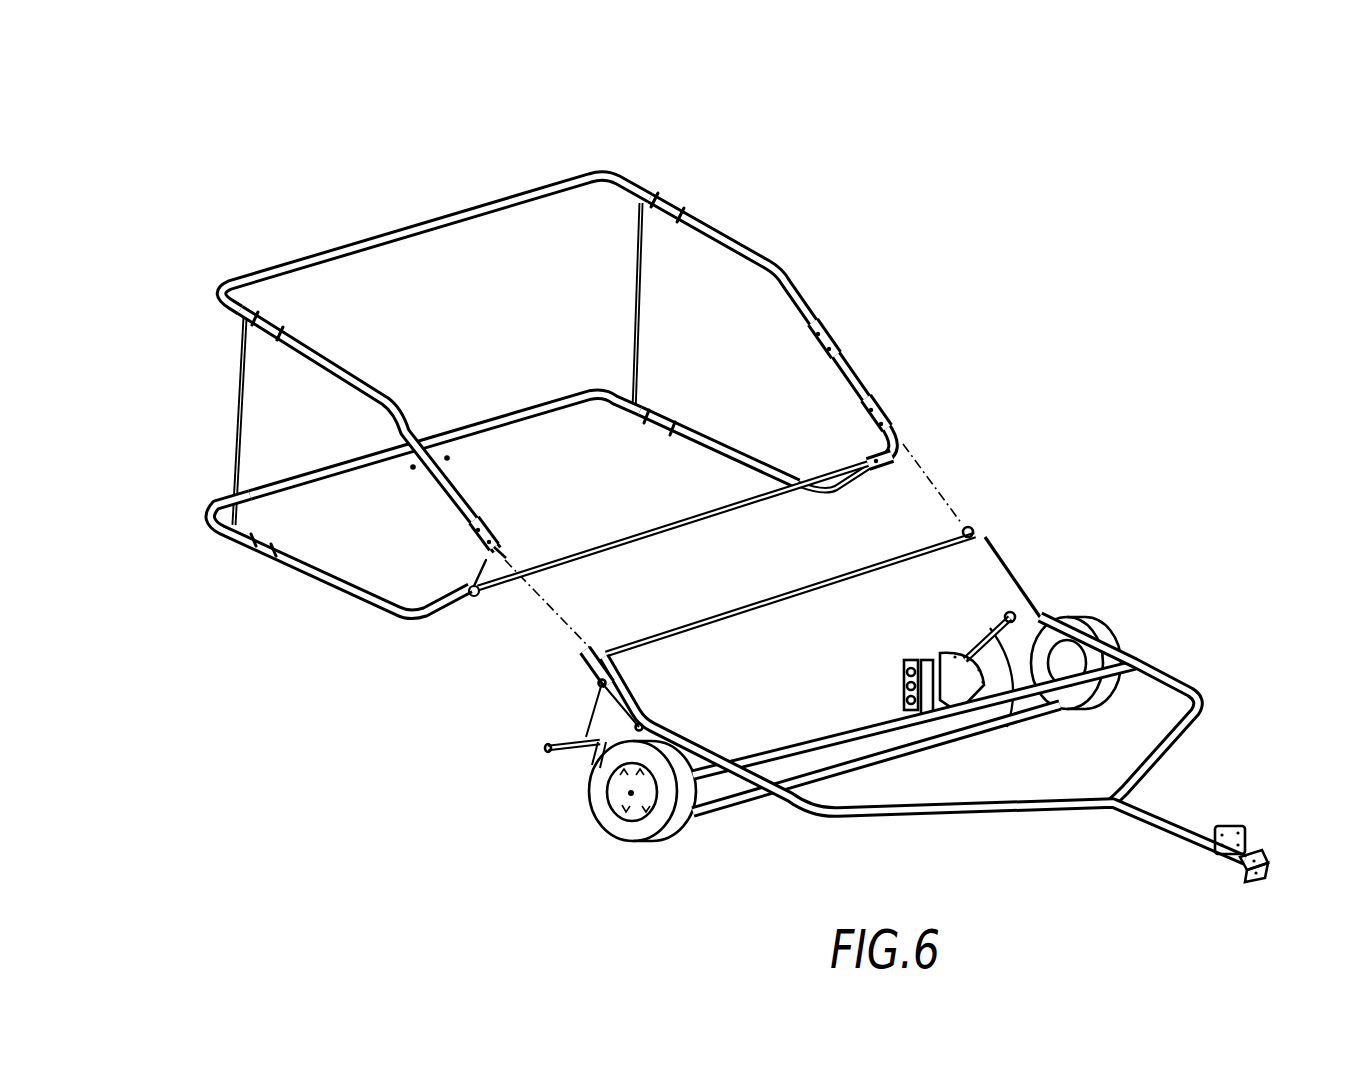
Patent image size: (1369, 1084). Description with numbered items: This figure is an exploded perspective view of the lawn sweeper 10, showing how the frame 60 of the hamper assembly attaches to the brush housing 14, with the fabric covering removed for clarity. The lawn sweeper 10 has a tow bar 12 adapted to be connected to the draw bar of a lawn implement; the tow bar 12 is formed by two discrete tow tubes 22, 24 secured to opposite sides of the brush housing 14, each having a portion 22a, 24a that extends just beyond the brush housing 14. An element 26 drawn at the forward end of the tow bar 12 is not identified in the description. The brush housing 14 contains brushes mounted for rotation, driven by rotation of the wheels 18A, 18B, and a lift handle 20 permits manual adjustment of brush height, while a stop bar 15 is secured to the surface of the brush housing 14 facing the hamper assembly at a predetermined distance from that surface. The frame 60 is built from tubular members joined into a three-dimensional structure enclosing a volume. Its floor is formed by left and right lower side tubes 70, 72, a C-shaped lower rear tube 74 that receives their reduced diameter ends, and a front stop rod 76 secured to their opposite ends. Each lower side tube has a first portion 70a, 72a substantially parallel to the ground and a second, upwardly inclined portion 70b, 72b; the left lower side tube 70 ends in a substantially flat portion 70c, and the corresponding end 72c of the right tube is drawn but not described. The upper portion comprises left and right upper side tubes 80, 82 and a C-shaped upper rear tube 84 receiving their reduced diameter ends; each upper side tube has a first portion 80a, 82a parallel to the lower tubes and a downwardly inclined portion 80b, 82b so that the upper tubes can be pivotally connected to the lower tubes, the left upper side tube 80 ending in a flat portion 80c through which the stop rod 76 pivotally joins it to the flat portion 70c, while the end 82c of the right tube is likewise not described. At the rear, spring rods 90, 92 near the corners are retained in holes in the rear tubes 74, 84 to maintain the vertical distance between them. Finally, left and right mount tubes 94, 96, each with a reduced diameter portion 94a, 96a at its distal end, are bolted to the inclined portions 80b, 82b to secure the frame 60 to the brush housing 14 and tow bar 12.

The lawn sweeper 10 is at (743, 505).
The tow bar 12 is at (906, 686).
The brush housing 14 is at (1000, 583).
The stop bar 15 is at (560, 755).
The wheel 18A is at (653, 833).
The wheel 18B is at (1090, 627).
The lift handle 20 is at (1007, 727).
The tow tube 22 is at (945, 810).
The portion of tow tube 22a is at (580, 672).
The tow tube 24 is at (1210, 690).
The portion of tow tube 24a is at (985, 532).
The hitch bracket 26 is at (1257, 853).
The frame 60 is at (572, 389).
The left lower side tube 70 is at (341, 583).
The first portion of left lower side tube 70a is at (300, 567).
The upwardly inclined portion of left lower side tube 70b is at (443, 607).
The substantially flat portion of left lower side tube 70c is at (460, 583).
The right lower side tube 72 is at (782, 459).
The first portion of right lower side tube 72a is at (693, 437).
The upwardly inclined portion of right lower side tube 72b is at (837, 490).
The rear tube end 72c is at (870, 470).
The lower rear tube 74 is at (540, 400).
The front stop rod 76 is at (691, 523).
The left upper side tube 80 is at (409, 473).
The first portion of left upper side tube 80a is at (330, 362).
The downwardly inclined portion of left upper side tube 80b is at (443, 483).
The substantially flat portion of left upper side tube 80c is at (475, 596).
The right upper side tube 82 is at (817, 306).
The first portion of right upper side tube 82a is at (707, 227).
The downwardly inclined portion of right upper side tube 82b is at (840, 343).
The side tube end 82c is at (905, 460).
The upper rear tube 84 is at (430, 222).
The spring rod 90 is at (240, 395).
The spring rod 92 is at (637, 285).
The left mount tube 94 is at (480, 510).
The reduced diameter portion of left mount tube 94a is at (510, 547).
The right mount tube 96 is at (837, 373).
The reduced diameter portion of right mount tube 96a is at (893, 452).